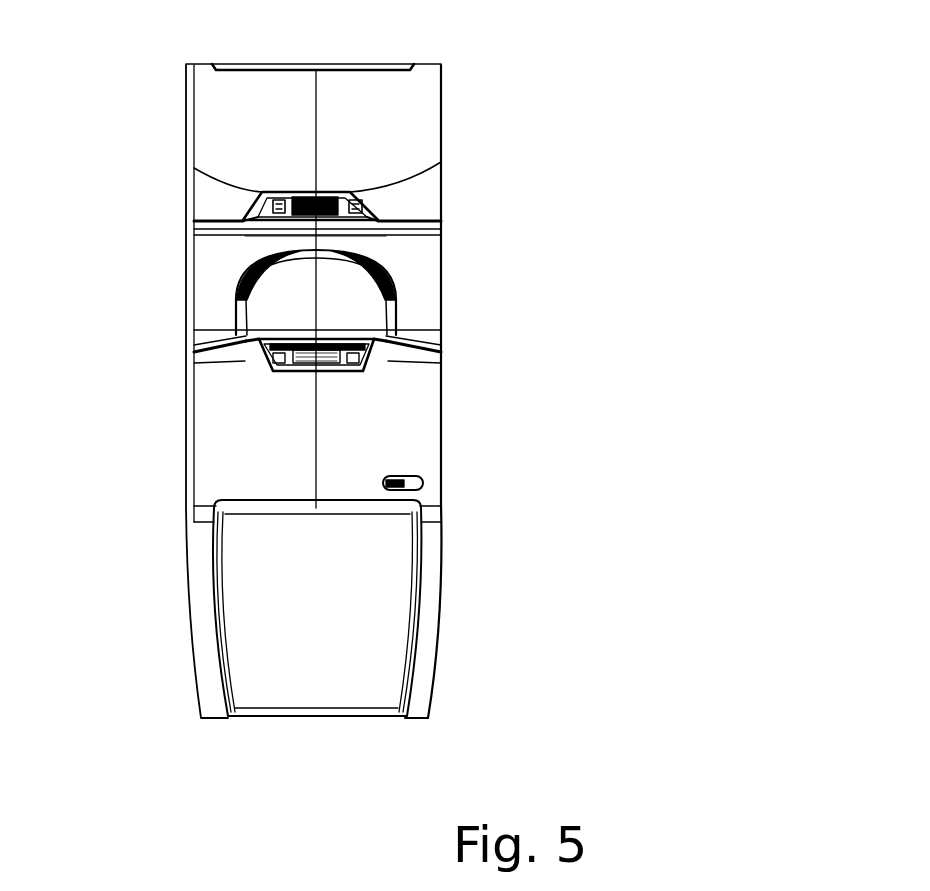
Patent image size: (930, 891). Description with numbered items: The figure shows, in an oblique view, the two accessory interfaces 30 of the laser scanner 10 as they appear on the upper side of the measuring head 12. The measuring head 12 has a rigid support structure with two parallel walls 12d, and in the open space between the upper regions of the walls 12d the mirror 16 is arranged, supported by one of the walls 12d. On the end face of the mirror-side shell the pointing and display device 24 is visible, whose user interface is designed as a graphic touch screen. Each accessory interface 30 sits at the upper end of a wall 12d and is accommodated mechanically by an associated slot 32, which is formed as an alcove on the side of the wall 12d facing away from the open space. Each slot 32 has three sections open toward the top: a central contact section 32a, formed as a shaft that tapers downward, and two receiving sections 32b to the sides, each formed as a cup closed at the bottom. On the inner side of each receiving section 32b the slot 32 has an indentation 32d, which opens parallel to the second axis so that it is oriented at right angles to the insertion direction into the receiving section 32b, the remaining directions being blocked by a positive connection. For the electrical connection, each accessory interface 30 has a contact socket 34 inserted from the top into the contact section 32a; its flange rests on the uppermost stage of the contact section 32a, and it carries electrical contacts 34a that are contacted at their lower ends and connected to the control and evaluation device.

The laser scanner 10 is at (556, 222).
The measuring head 12 is at (182, 109).
The walls 12d is at (428, 270).
The mirror 16 is at (392, 318).
The pointing and display device 24 is at (365, 601).
The accessory interface 30 is at (386, 199).
The slot 32 is at (243, 208).
The contact section 32a is at (225, 188).
The receiving sections 32b is at (245, 234).
The indentation 32d is at (245, 341).
The contact socket 34 is at (425, 240).
The electrical contacts 34a is at (410, 180).